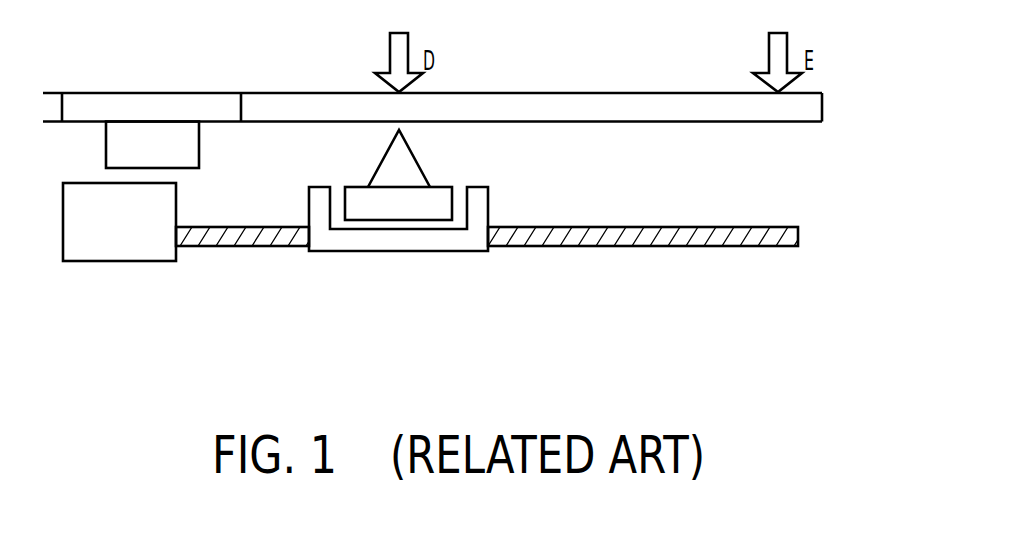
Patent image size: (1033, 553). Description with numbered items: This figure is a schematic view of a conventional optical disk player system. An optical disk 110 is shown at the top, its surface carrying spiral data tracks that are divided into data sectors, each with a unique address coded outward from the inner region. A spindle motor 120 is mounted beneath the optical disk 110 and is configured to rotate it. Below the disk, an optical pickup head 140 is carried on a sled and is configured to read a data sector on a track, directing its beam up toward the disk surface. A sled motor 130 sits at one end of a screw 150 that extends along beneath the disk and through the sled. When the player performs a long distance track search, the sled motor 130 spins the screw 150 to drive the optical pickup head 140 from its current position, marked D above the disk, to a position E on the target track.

The optical disk 110 is at (260, 100).
The spindle motor 120 is at (199, 143).
The sled motor 130 is at (142, 248).
The optical pickup head 140 is at (433, 187).
The screw 150 is at (657, 240).